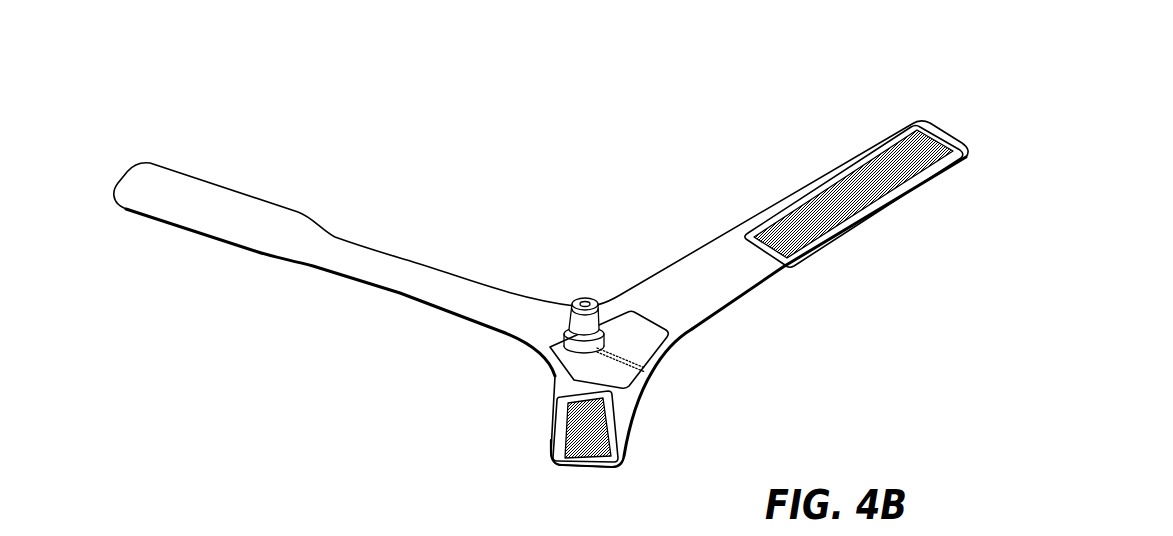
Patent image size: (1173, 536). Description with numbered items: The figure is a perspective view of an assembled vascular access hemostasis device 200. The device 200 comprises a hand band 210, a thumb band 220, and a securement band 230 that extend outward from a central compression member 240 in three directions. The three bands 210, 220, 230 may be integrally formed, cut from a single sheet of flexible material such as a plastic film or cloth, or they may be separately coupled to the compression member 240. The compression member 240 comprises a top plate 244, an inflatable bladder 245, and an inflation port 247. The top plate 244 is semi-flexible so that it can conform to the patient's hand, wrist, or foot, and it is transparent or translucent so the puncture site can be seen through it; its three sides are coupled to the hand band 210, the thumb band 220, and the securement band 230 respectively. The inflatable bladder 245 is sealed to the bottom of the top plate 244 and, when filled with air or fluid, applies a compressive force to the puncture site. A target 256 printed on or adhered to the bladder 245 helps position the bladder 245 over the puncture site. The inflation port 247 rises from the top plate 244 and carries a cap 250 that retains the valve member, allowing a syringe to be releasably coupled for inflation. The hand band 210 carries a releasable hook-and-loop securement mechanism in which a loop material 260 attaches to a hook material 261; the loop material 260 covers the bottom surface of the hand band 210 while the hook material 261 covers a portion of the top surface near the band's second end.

The hemostasis device 200 is at (515, 186).
The hand band 210 is at (772, 285).
The thumb band 220 is at (333, 205).
The securement band 230 is at (549, 430).
The compression member 240 is at (655, 380).
The top plate 244 is at (651, 329).
The inflatable bladder 245 is at (662, 369).
The inflation port 247 is at (564, 331).
The cap 250 is at (596, 297).
The target 256 is at (620, 333).
The loop material 260 is at (878, 213).
The hook material 261 is at (848, 183).